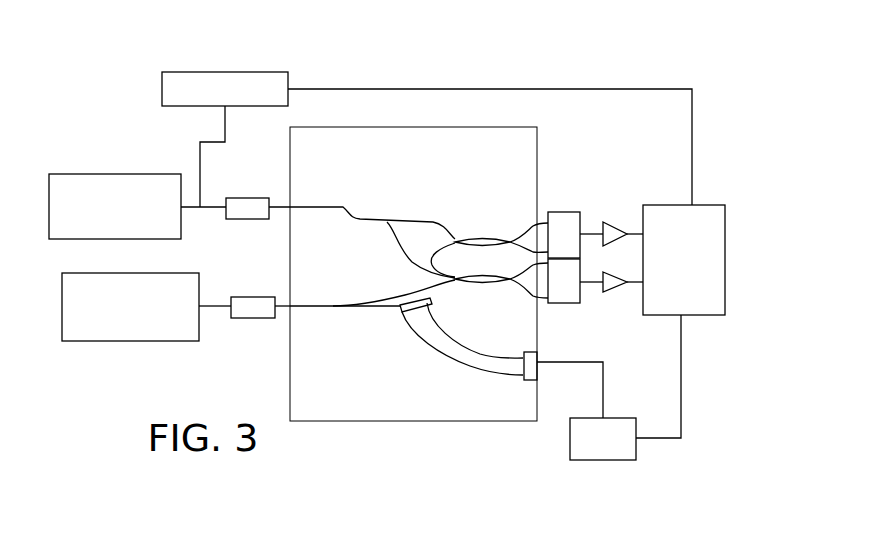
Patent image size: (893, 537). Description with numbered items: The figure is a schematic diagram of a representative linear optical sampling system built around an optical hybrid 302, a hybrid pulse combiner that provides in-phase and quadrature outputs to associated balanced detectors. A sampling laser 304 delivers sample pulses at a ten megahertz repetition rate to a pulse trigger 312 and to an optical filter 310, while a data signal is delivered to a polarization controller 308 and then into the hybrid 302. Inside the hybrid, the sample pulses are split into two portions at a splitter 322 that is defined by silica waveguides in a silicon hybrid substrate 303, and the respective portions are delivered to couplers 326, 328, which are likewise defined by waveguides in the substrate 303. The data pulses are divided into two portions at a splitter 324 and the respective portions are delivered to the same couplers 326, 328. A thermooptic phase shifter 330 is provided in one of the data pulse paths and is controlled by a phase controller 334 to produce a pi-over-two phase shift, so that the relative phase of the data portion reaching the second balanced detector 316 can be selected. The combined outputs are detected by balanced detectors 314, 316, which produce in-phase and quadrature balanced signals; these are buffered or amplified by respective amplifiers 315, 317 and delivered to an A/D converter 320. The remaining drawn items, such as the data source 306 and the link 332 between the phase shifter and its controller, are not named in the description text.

The optical hybrid 302 is at (460, 442).
The silicon hybrid substrate 303 is at (415, 127).
The sampling laser 304 is at (115, 174).
The data source 306 is at (165, 342).
The polarization controller 308 is at (242, 318).
The optical filter 310 is at (237, 198).
The pulse trigger 312 is at (226, 72).
The balanced detector 314 is at (572, 212).
The amplifier 315 is at (620, 227).
The second balanced detector 316 is at (563, 303).
The amplifier 317 is at (618, 287).
The A/D converter 320 is at (725, 285).
The splitter 322 is at (360, 217).
The splitter 324 is at (322, 313).
The coupler 326 is at (482, 236).
The coupler 328 is at (480, 285).
The thermooptic phase shifter 330 is at (400, 313).
The fiber link 332 is at (537, 386).
The phase controller 334 is at (603, 460).